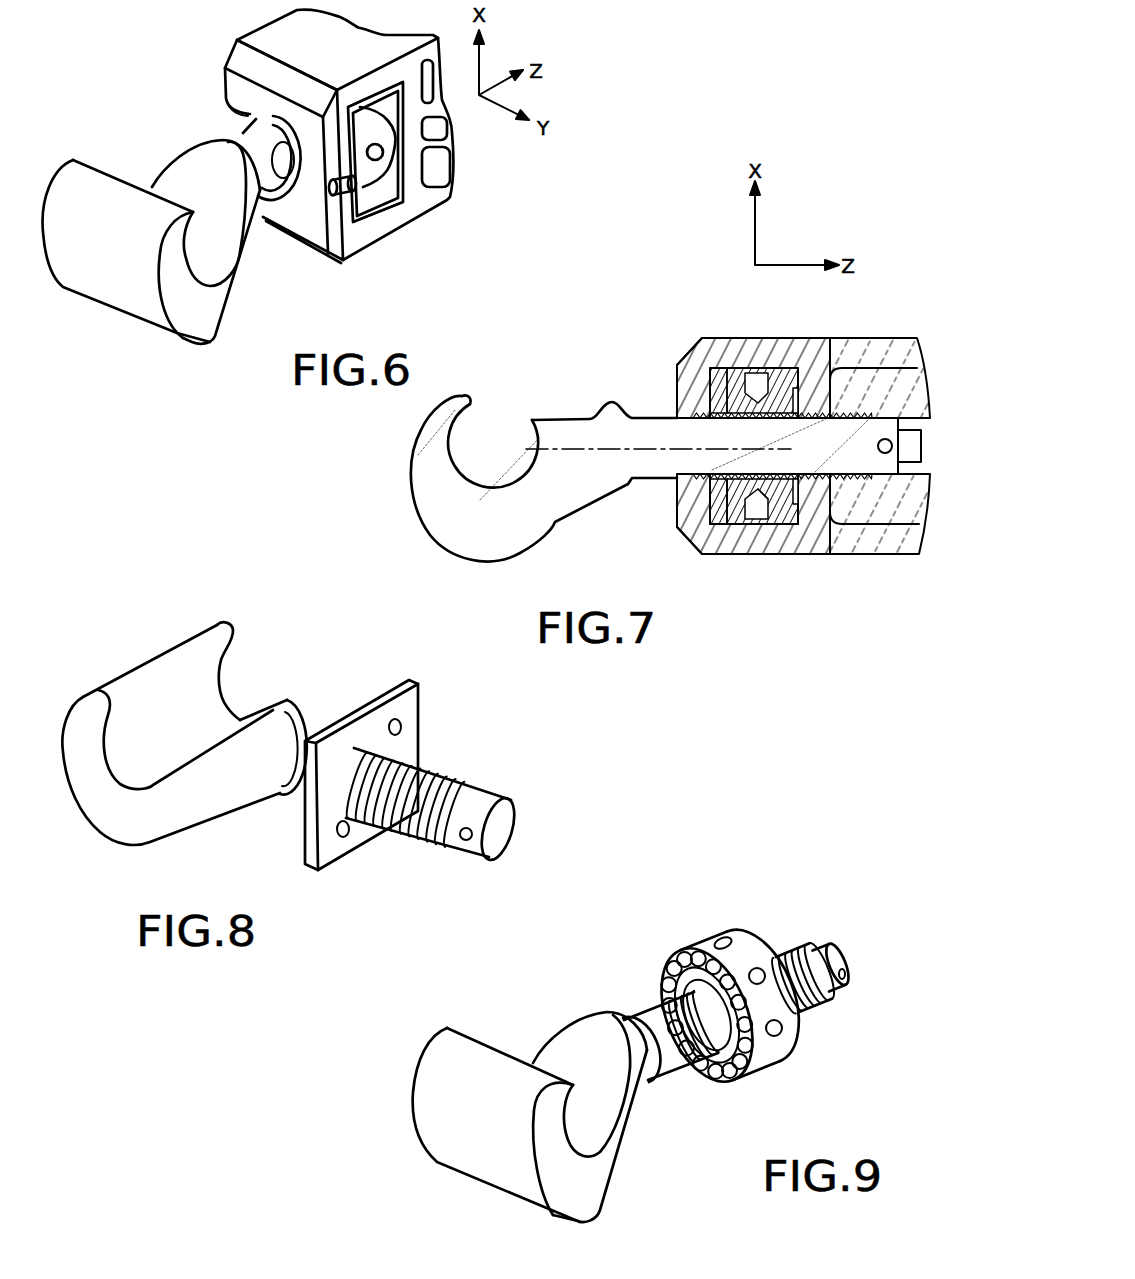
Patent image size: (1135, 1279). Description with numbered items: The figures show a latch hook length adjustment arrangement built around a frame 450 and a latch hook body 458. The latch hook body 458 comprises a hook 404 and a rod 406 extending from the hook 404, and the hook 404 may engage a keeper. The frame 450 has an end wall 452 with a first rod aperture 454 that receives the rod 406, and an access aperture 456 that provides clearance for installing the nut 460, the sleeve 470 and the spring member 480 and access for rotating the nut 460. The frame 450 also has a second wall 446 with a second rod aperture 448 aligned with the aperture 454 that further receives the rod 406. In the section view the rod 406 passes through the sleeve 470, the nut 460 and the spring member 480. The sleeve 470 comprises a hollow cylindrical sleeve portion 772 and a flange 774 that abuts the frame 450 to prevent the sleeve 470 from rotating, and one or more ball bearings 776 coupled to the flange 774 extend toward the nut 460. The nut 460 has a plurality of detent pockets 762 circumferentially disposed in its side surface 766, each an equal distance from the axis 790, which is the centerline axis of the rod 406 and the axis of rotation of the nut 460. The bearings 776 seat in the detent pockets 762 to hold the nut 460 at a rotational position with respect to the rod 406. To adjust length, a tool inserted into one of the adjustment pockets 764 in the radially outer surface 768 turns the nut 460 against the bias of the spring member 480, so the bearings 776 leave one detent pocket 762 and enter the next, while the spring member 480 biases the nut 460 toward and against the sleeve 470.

In FIG. 6, the hook 404 is at (195, 327).
In FIG. 7, the hook 404 is at (484, 538).
In FIG. 8, the hook 404 is at (180, 654).
In FIG. 9, the hook 404 is at (462, 1118).
In FIG. 6, the rod 406 is at (282, 171).
In FIG. 7, the rod 406 is at (808, 450).
In FIG. 8, the rod 406 is at (500, 829).
In FIG. 9, the rod 406 is at (818, 940).
In FIG. 7, the second wall 446 is at (822, 494).
In FIG. 7, the aperture 448 is at (852, 370).
In FIG. 6, the frame 450 is at (311, 52).
In FIG. 7, the frame 450 is at (878, 550).
In FIG. 6, the wall 452 is at (237, 120).
In FIG. 6, the aperture 454 is at (250, 116).
In FIG. 7, the aperture 454 is at (676, 374).
In FIG. 6, the aperture 456 is at (379, 221).
In FIG. 6, the latch hook body 458 is at (89, 182).
In FIG. 7, the latch hook body 458 is at (607, 417).
In FIG. 8, the latch hook body 458 is at (287, 704).
In FIG. 9, the latch hook body 458 is at (569, 1029).
In FIG. 6, the nut 460 is at (386, 161).
In FIG. 7, the nut 460 is at (783, 381).
In FIG. 9, the nut 460 is at (745, 947).
In FIG. 6, the sleeve 470 is at (354, 218).
In FIG. 7, the sleeve 470 is at (722, 372).
In FIG. 8, the sleeve 470 is at (398, 682).
In FIG. 7, the spring member 480 is at (810, 389).
In FIG. 7, the detent pockets 762 is at (731, 393).
In FIG. 9, the detent pockets 762 is at (668, 968).
In FIG. 7, the adjustment pockets 764 is at (772, 508).
In FIG. 9, the adjustment pockets 764 is at (783, 1028).
In FIG. 9, the side surface 766 is at (731, 1084).
In FIG. 9, the radially outer surface 768 is at (702, 940).
In FIG. 7, the hollow cylindrical sleeve portion 772 is at (679, 501).
In FIG. 7, the flange 774 is at (721, 515).
In FIG. 8, the flange 774 is at (354, 716).
In FIG. 7, the bearings 776 is at (731, 515).
In FIG. 8, the bearings 776 is at (401, 727).
In FIG. 7, the axis 790 is at (538, 448).